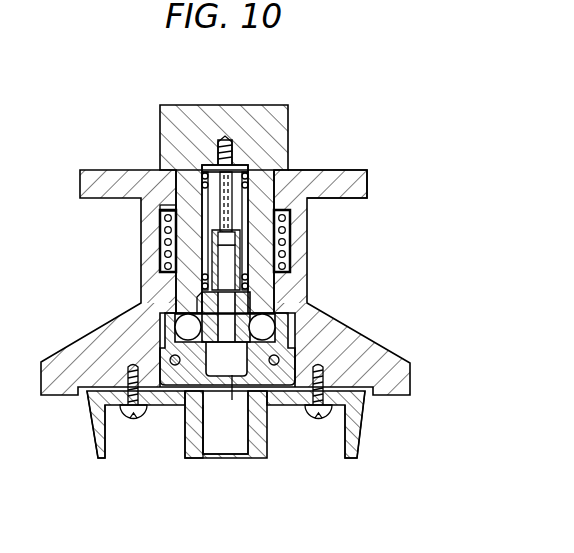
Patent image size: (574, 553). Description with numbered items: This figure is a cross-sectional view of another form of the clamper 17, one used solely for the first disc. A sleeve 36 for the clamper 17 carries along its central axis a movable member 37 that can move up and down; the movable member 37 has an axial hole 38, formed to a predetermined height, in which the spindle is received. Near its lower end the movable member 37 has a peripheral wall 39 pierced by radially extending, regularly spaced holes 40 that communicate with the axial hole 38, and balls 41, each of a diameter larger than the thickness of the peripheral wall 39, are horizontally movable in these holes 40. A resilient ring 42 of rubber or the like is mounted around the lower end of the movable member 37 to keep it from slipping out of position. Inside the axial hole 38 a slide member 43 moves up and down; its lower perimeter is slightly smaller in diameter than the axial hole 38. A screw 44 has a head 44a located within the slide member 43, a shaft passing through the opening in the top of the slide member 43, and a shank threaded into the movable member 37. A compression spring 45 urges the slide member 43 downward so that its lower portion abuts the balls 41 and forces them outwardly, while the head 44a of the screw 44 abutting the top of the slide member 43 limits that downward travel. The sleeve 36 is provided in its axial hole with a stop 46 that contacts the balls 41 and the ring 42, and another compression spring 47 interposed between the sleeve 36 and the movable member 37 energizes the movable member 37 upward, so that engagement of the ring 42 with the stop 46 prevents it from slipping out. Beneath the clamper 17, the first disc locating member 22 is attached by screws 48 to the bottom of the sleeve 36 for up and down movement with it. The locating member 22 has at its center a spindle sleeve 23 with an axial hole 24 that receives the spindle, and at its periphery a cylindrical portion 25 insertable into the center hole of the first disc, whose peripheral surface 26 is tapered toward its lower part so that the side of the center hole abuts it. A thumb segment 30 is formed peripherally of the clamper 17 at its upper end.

The clamper 17 is at (347, 157).
The first disc locating member 22 is at (98, 458).
The spindle sleeve 23 is at (191, 458).
The axial hole 24 is at (228, 446).
The cylindrical portion 25 is at (352, 421).
The peripheral surface 26 is at (357, 452).
The thumb segment 30 is at (367, 187).
The sleeve 36 is at (141, 248).
The movable member 37 is at (279, 104).
The axial hole 38 is at (268, 445).
The peripheral wall 39 is at (268, 282).
The holes 40 is at (203, 300).
The balls 41 is at (182, 320).
The resilient ring 42 is at (280, 360).
The slide member 43 is at (252, 318).
The screw 44 is at (290, 216).
The head 44a is at (160, 228).
The compression spring 45 is at (200, 179).
The stop 46 is at (292, 332).
The compression spring 47 is at (236, 243).
The screws 48 is at (133, 422).